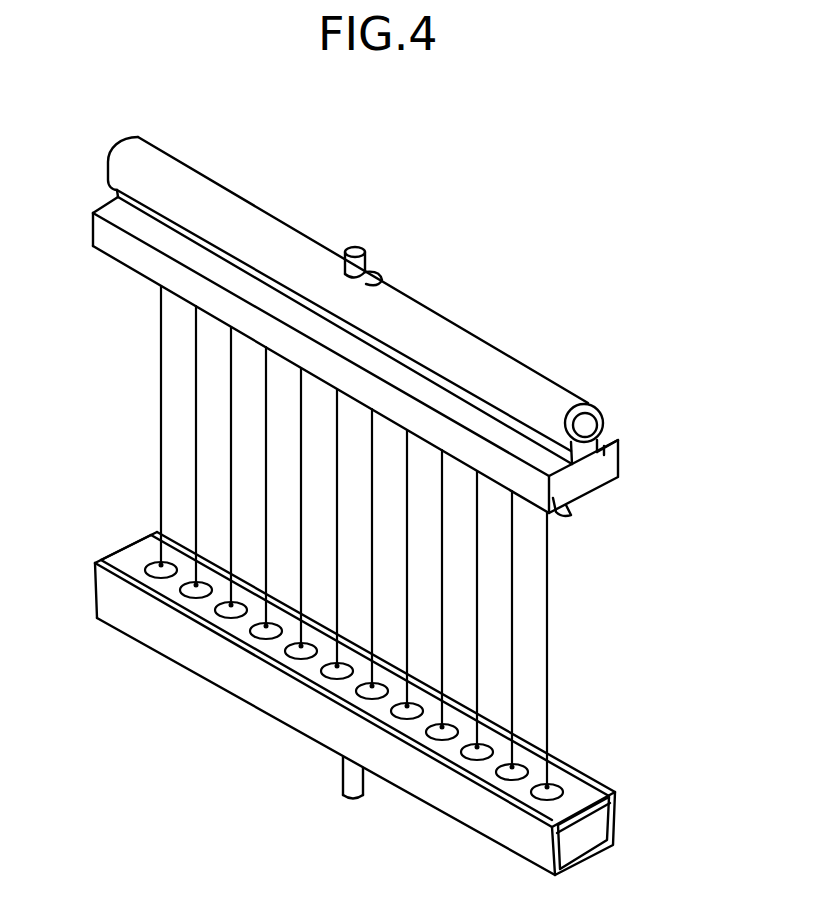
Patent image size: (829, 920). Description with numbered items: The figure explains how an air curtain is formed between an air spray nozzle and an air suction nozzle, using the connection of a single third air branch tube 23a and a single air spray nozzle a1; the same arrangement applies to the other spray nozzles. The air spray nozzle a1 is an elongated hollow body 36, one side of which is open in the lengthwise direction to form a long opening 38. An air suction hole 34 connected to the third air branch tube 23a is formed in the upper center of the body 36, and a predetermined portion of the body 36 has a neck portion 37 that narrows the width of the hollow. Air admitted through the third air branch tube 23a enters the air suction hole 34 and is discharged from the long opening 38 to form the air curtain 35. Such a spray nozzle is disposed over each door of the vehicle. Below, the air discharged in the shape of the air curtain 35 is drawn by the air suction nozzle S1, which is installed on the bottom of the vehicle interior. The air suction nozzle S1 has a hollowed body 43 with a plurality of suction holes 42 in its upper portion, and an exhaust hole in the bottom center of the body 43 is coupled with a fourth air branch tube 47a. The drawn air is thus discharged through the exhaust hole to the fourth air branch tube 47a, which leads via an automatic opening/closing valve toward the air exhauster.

The third air branch tube 23a is at (368, 258).
The air suction hole 34 is at (381, 282).
The air spray nozzle a1 is at (492, 337).
The elongated hollow body 36 is at (558, 396).
The neck portion 37 is at (606, 437).
The opening 38 is at (580, 507).
The air curtain 35 is at (122, 286).
The suction holes 42 is at (482, 747).
The hollowed body 43 is at (373, 716).
The fourth air branch tube 47a is at (345, 778).
The air suction nozzle S1 is at (476, 831).